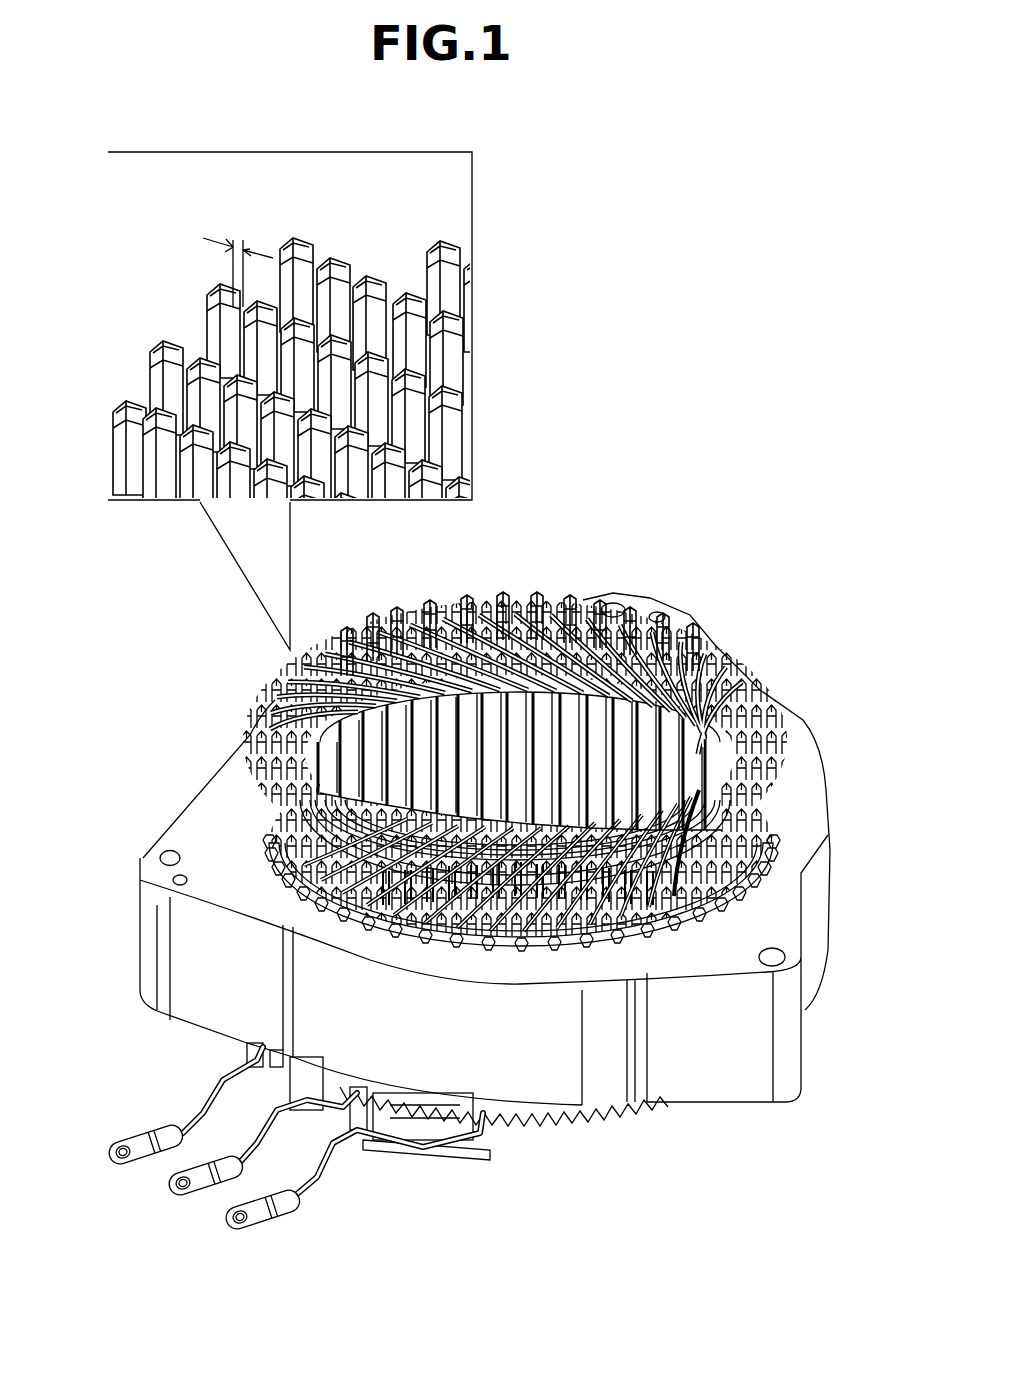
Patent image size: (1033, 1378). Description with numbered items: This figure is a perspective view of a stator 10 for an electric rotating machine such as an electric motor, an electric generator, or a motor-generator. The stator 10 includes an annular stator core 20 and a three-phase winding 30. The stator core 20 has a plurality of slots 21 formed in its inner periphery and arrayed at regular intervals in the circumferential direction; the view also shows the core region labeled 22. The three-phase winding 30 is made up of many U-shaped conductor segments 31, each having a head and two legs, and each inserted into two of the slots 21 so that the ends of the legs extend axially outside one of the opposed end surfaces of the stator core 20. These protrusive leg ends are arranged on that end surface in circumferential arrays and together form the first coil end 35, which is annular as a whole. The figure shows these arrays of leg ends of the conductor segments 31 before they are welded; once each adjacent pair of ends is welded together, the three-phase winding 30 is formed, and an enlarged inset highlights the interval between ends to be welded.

The stator 10 is at (679, 551).
The stator core 20 is at (731, 1116).
The slots 21 is at (262, 718).
The core end face 22 is at (215, 820).
The three-phase winding 30 is at (773, 677).
The conductor segments 31 is at (587, 947).
The first coil end 35 is at (703, 650).